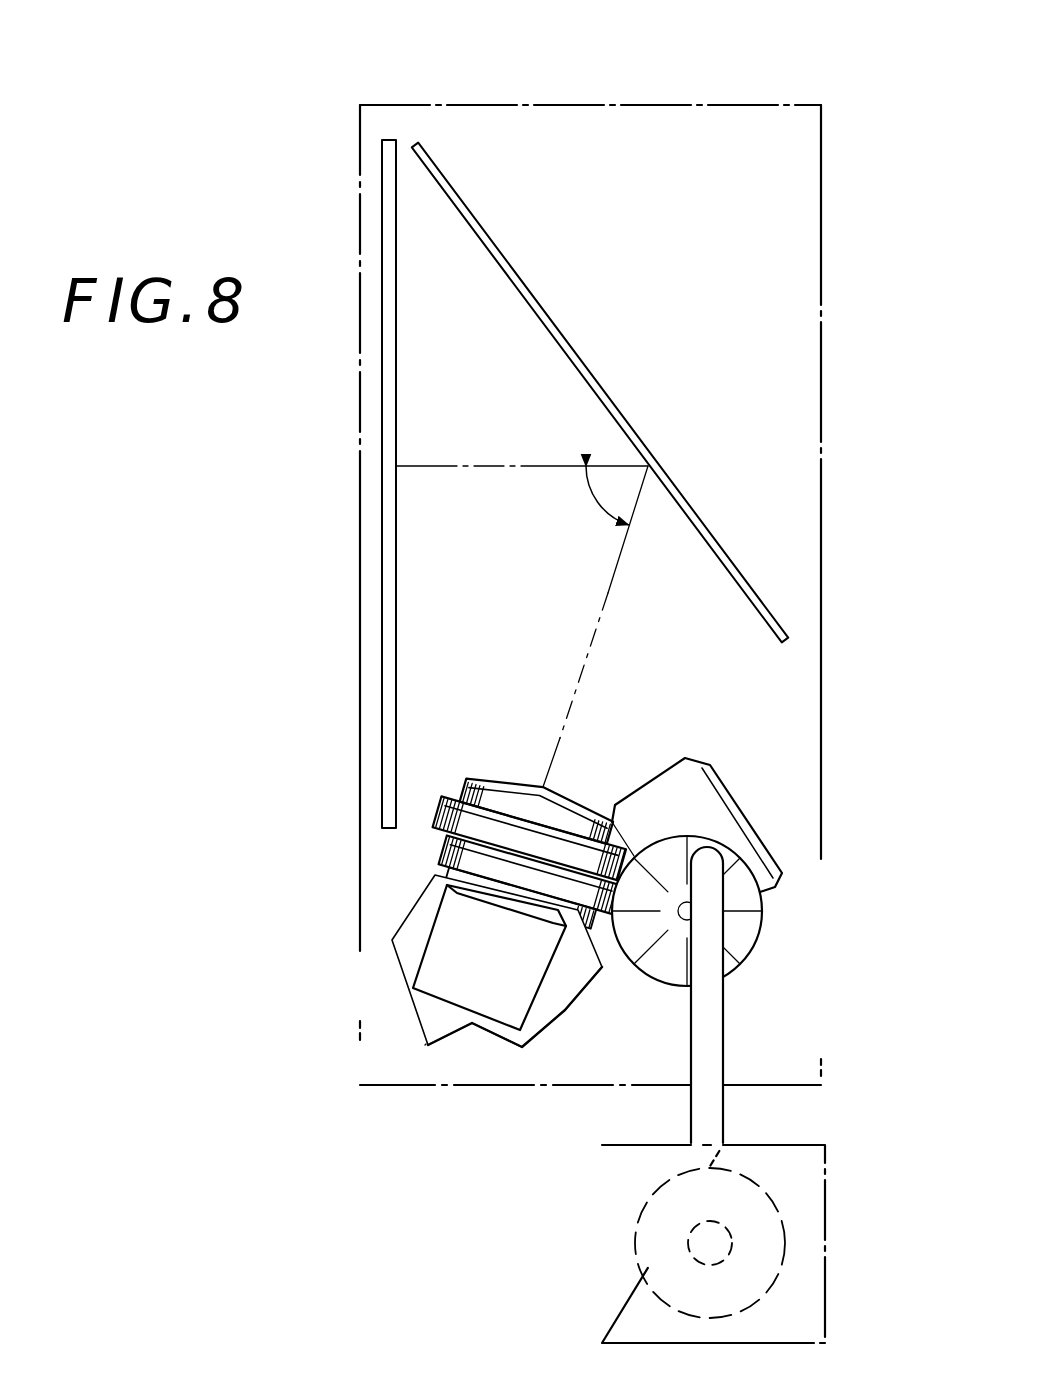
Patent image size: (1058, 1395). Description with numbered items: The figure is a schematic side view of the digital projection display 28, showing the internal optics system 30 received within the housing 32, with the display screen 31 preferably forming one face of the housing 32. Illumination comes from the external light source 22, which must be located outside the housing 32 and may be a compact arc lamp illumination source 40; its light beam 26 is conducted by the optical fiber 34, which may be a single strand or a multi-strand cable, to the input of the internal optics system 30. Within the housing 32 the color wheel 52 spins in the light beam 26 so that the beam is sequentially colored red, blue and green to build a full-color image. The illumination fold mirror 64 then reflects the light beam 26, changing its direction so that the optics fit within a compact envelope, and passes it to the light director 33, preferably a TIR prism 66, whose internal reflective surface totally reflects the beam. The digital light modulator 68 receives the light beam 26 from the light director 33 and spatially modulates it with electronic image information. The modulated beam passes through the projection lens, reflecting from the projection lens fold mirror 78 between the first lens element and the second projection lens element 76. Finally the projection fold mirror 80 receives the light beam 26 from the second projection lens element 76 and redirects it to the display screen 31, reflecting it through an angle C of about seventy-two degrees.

The external light source 22 is at (826, 1172).
The light beam 26 is at (591, 640).
The digital projection display 28 is at (818, 88).
The internal optics system 30 is at (403, 899).
The display screen 31 is at (381, 381).
The housing 32 is at (591, 105).
The light director 33 is at (421, 1051).
The optical fiber 34 is at (712, 1048).
The compact arc lamp illumination source 40 is at (636, 1262).
The color wheel 52 is at (727, 973).
The illumination fold mirror 64 is at (720, 776).
The TIR prism 66 is at (415, 1026).
The digital light modulator 68 is at (473, 1027).
The second projection lens element 76 is at (435, 814).
The projection lens fold mirror 78 is at (458, 965).
The projection fold mirror 80 is at (553, 320).
The angle C is at (597, 504).